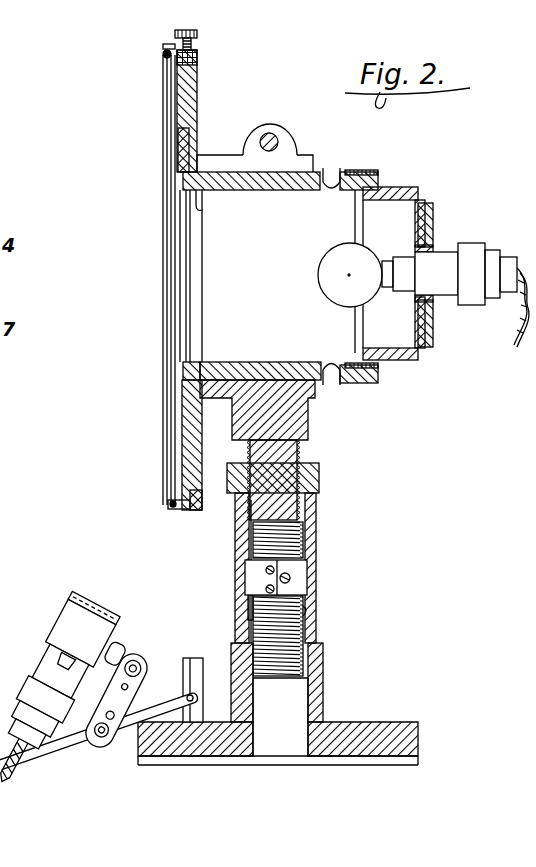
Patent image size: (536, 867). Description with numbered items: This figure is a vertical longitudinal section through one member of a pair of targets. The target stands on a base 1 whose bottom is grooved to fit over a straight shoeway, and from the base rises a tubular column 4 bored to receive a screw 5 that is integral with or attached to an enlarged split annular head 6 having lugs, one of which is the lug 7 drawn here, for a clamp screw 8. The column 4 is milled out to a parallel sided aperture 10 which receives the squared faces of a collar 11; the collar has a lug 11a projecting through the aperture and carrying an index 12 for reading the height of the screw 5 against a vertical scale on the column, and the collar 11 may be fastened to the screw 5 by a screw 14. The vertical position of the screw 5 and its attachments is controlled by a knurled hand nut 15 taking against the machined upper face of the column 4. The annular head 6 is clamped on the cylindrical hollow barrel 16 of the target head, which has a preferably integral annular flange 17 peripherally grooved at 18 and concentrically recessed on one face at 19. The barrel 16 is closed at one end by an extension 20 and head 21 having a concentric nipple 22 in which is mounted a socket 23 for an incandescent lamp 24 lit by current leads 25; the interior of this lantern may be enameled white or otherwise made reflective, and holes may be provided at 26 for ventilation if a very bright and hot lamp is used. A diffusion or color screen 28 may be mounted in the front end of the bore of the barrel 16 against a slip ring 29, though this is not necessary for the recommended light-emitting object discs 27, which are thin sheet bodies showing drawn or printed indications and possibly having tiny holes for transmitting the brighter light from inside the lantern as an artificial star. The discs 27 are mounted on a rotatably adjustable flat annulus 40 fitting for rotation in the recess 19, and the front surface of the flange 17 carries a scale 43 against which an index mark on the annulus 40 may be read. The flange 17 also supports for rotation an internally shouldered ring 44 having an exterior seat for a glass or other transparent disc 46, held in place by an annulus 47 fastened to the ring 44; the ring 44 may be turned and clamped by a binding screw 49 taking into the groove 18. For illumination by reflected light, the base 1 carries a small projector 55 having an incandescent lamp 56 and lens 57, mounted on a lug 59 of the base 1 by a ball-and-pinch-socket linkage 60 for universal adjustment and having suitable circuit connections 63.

The base 1 is at (355, 738).
The tubular column 4 is at (247, 596).
The screw 5 is at (252, 513).
The split annular head 6 is at (301, 167).
The lug 7 is at (281, 128).
The clamp screw 8 is at (281, 145).
The parallel sided aperture 10 is at (314, 606).
The collar 11 is at (300, 568).
The lug 11a is at (267, 582).
The index 12 is at (245, 573).
The screw 14 is at (291, 579).
The knurled hand nut 15 is at (321, 480).
The hollow barrel 16 is at (350, 172).
The annular flange 17 is at (199, 110).
The peripheral groove 18 is at (193, 512).
The concentric recess 19 is at (189, 134).
The extension 20 is at (398, 189).
The head 21 is at (422, 253).
The nipple 22 is at (440, 303).
The socket 23 is at (460, 249).
The incandescent lamp 24 is at (341, 300).
The current leads 25 is at (513, 348).
The ventilation holes 26 is at (352, 402).
The object disc 27 is at (180, 223).
The color screen 28 is at (192, 256).
The slip ring 29 is at (202, 208).
The flat annulus 40 is at (190, 414).
The scale 43 is at (175, 117).
The internally shouldered ring 44 is at (199, 42).
The transparent disc 46 is at (186, 368).
The annulus 47 is at (163, 57).
The binding screw 49 is at (171, 37).
The projector 55 is at (70, 621).
The incandescent lamp 56 is at (55, 647).
The lens 57 is at (77, 597).
The lug 59 is at (192, 660).
The ball-and-pinch-socket linkage 60 is at (121, 651).
The circuit connections 63 is at (22, 764).